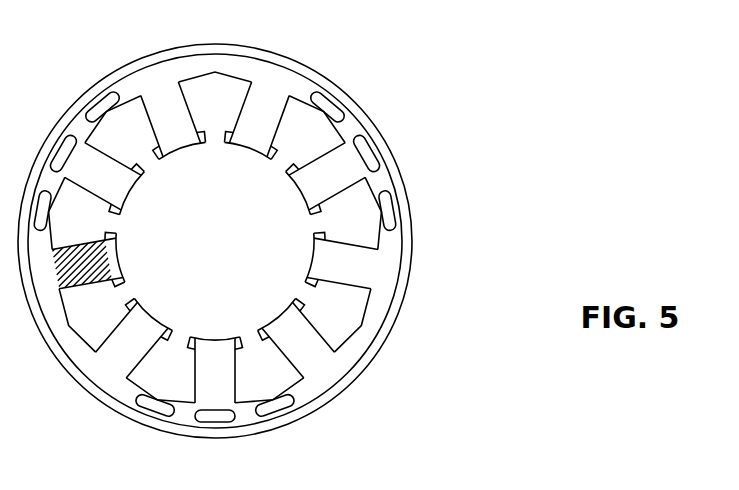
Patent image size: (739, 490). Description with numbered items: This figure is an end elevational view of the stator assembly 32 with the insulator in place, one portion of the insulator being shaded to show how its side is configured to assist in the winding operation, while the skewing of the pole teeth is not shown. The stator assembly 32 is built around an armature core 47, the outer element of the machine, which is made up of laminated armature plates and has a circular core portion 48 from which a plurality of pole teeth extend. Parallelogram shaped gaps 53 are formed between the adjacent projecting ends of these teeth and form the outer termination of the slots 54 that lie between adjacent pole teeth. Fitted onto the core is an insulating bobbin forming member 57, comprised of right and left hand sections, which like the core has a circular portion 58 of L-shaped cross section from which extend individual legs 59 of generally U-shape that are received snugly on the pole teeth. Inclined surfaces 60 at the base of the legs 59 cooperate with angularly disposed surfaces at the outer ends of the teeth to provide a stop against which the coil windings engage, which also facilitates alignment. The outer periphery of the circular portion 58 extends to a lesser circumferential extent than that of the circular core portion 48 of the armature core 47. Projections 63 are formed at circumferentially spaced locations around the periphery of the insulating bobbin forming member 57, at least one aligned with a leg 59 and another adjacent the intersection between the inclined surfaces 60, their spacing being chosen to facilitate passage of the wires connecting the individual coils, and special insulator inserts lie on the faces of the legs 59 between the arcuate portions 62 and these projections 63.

The stator assembly 32 is at (443, 95).
The armature core 47 is at (405, 197).
The circular core portion 48 is at (400, 157).
The parallelogram shaped gaps 53 is at (314, 224).
The slots 54 is at (348, 327).
The insulating bobbin forming member 57 is at (387, 258).
The circular portion 58 is at (232, 65).
The legs 59 is at (373, 304).
The inclined surfaces 60 is at (293, 390).
The arcuate portions 62 is at (273, 313).
The projections 63 is at (321, 100).